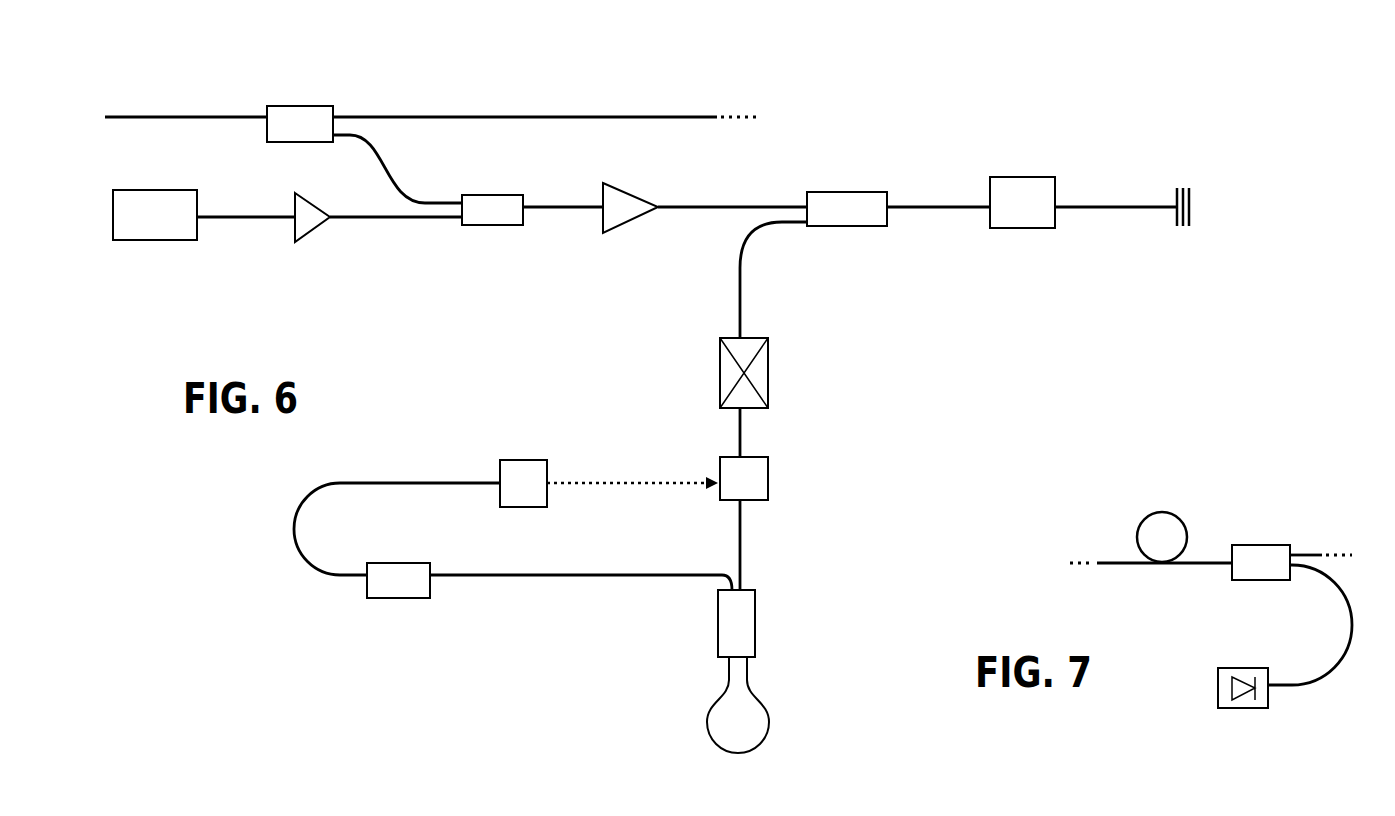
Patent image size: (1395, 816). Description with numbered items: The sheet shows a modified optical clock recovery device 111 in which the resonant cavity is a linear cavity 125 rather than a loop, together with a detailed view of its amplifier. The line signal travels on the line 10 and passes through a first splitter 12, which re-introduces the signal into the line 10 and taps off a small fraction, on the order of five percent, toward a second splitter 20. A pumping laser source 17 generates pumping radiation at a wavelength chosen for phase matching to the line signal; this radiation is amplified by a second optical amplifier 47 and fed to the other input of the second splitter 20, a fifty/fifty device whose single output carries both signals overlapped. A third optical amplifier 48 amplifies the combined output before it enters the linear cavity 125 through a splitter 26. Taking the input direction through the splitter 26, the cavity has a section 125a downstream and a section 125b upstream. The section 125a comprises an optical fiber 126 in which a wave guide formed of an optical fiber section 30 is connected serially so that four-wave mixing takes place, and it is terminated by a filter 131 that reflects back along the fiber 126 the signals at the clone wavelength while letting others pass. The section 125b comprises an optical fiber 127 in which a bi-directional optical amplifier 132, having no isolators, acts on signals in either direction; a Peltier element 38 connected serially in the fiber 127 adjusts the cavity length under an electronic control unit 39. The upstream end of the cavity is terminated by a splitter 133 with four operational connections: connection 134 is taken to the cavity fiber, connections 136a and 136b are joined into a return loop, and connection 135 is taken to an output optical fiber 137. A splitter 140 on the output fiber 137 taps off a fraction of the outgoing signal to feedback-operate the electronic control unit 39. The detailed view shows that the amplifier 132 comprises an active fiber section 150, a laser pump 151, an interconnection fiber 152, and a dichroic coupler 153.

In FIG. 6, the line 10 is at (165, 116).
In FIG. 6, the first splitter 12 is at (313, 106).
In FIG. 6, the pumping laser source 17 is at (125, 197).
In FIG. 6, the second optical amplifier 47 is at (298, 211).
In FIG. 6, the second splitter 20 is at (508, 205).
In FIG. 6, the third optical amplifier 48 is at (602, 203).
In FIG. 6, the third splitter 26 is at (826, 194).
In FIG. 6, the device 111 is at (877, 161).
In FIG. 6, the linear cavity 125 is at (1027, 141).
In FIG. 6, the section 125a is at (928, 227).
In FIG. 6, the section 125b is at (777, 288).
In FIG. 6, the optical fiber 126 is at (1130, 205).
In FIG. 6, the optical fiber 127 is at (738, 278).
In FIG. 6, the filter 131 is at (1191, 196).
In FIG. 6, the optical fiber section 30 is at (1041, 216).
In FIG. 6, the bi-directional optical amplifier 132 is at (723, 377).
In FIG. 7, the bi-directional optical amplifier 132 is at (1217, 506).
In FIG. 6, the Peltier element 38 is at (768, 495).
In FIG. 6, the electronic control unit 39 is at (510, 463).
In FIG. 6, the splitter 140 is at (400, 568).
In FIG. 6, the output optical fiber 137 is at (532, 578).
In FIG. 6, the connection 135 is at (735, 578).
In FIG. 6, the connection 134 is at (753, 585).
In FIG. 6, the splitter 133 is at (723, 630).
In FIG. 6, the connection 136a is at (727, 660).
In FIG. 6, the connection 136b is at (750, 660).
In FIG. 7, the active fiber section 150 is at (1167, 512).
In FIG. 7, the dichroic coupler 153 is at (1243, 605).
In FIG. 7, the interconnection fiber 152 is at (1340, 652).
In FIG. 7, the laser pump 151 is at (1238, 704).